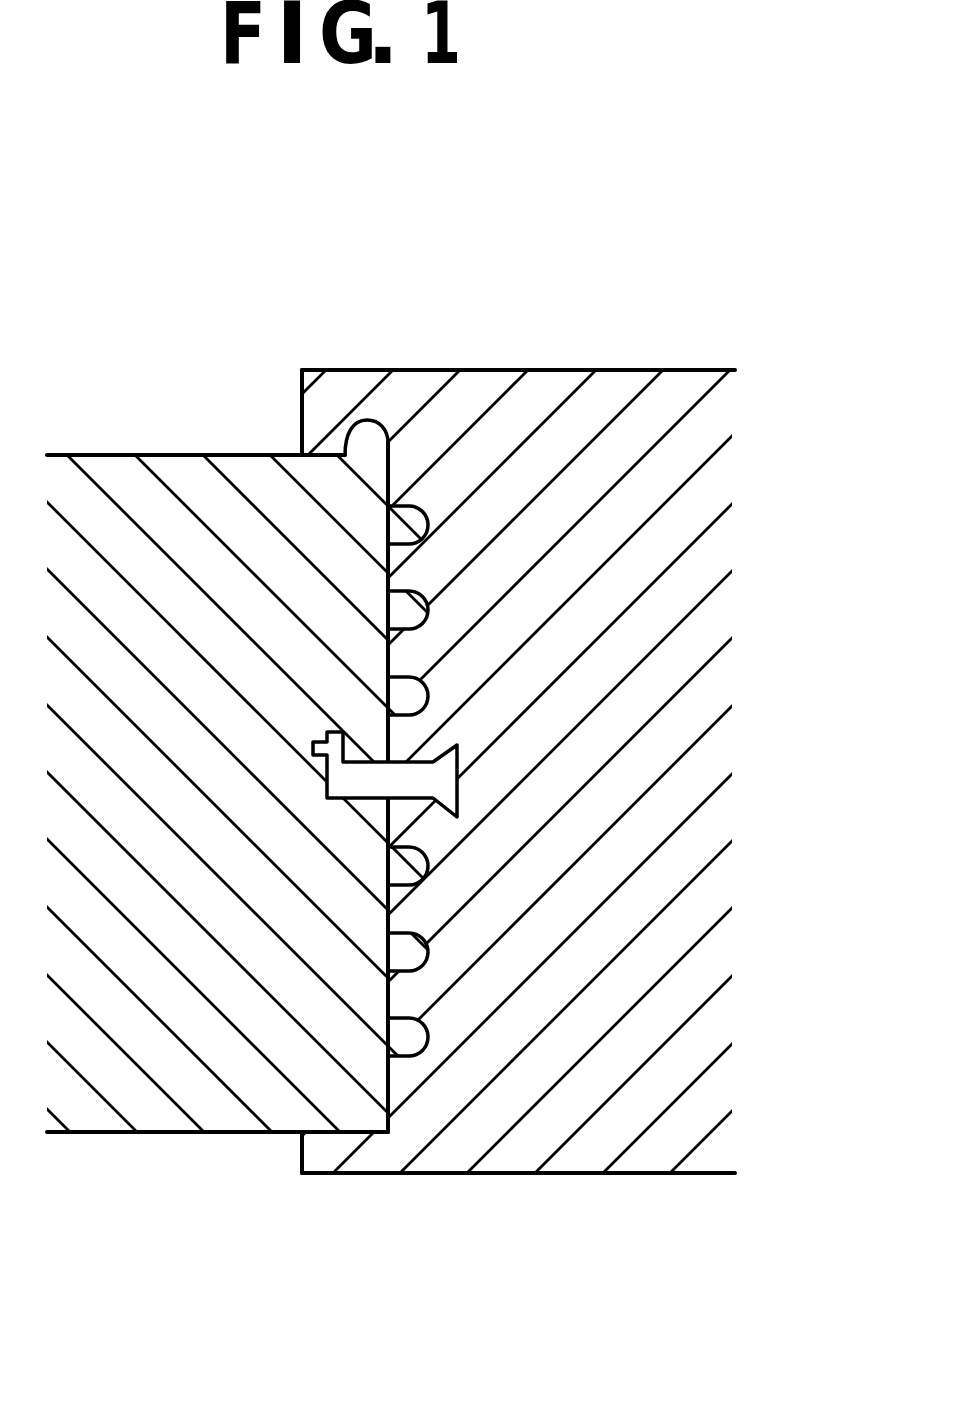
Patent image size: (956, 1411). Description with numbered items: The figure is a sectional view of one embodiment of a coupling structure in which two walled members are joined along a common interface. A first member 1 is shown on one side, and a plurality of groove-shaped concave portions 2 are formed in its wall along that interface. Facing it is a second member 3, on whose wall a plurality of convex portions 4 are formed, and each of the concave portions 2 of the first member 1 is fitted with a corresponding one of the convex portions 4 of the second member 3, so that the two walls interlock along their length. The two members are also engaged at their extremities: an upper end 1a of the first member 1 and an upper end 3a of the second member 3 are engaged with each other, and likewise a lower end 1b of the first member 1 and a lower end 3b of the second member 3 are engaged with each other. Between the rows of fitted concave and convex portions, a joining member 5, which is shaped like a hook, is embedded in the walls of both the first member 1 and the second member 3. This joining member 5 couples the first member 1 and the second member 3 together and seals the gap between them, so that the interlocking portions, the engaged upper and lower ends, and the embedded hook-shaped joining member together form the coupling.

The first member 1 is at (652, 420).
The upper end of the first member 1a is at (327, 410).
The lower end of the first member 1b is at (373, 1153).
The groove-shaped concave portions 2 is at (432, 600).
The second member 3 is at (73, 492).
The upper end of the second member 3a is at (383, 422).
The lower end of the second member 3b is at (342, 1100).
The convex portions 4 is at (397, 608).
The joining member 5 is at (442, 788).